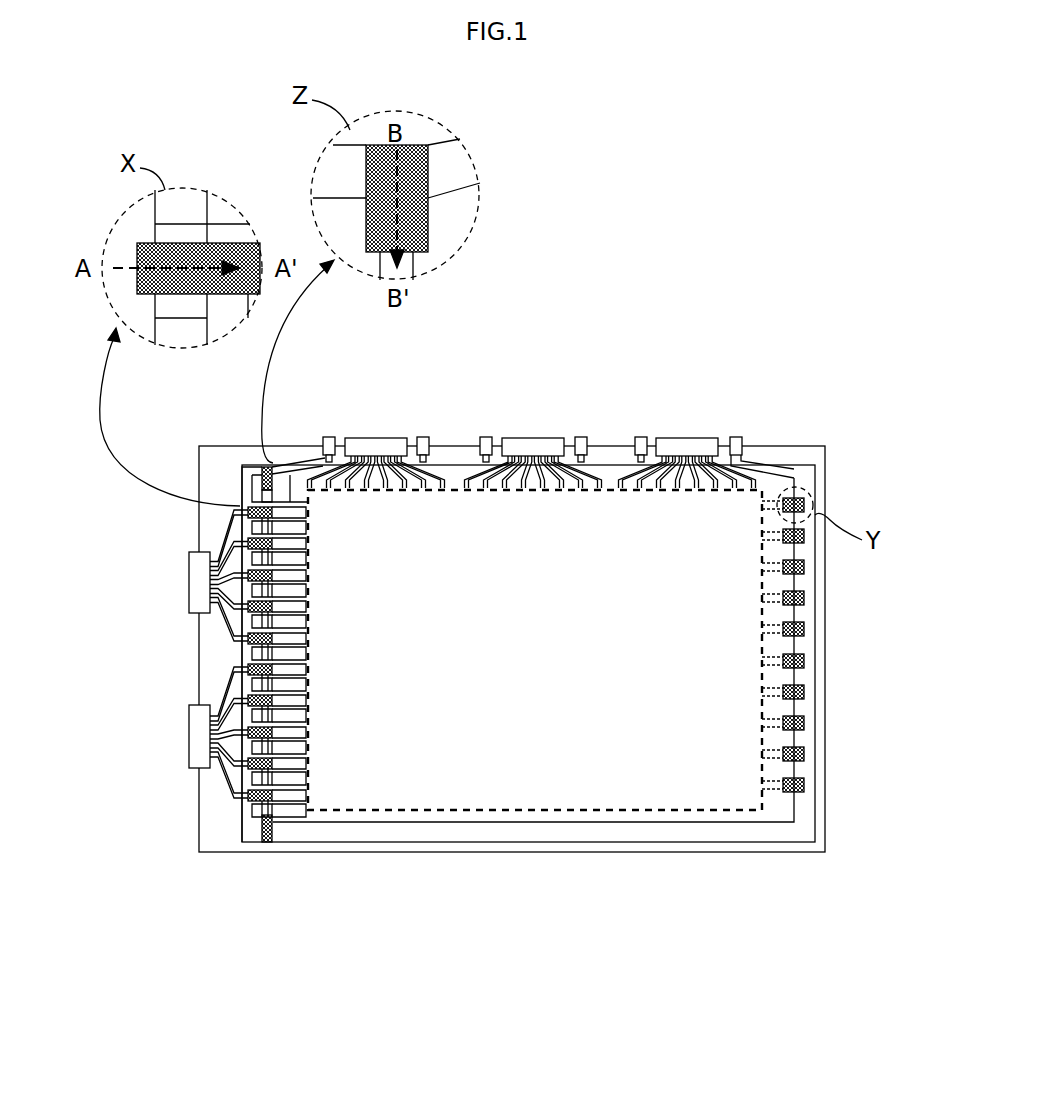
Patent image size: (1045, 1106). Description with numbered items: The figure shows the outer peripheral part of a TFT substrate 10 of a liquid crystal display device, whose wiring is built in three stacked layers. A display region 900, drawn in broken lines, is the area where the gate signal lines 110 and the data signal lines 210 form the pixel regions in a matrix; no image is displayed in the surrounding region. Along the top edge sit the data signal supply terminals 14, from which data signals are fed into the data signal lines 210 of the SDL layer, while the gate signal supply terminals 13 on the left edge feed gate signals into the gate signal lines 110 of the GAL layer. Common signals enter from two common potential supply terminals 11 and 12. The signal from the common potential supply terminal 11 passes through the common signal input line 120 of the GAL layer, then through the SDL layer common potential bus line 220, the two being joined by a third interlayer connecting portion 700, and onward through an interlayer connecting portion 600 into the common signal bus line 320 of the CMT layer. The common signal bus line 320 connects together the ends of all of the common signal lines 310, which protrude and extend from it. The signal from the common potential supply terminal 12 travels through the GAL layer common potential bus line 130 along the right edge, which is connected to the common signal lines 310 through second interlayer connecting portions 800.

The TFT substrate 10 is at (712, 880).
The common potential supply terminal 11 is at (330, 437).
The common potential supply terminal 12 is at (738, 437).
The gate signal supply terminal 13 is at (189, 580).
The data signal supply terminal 14 is at (384, 437).
The gate signal line 110 is at (290, 515).
The common signal input line 120 is at (310, 458).
The GAL layer common potential bus line 130 is at (815, 607).
The data signal line 210 is at (762, 489).
The SDL layer common potential bus line 220 is at (252, 776).
The common signal line 310 is at (296, 805).
The common signal bus line 320 is at (253, 828).
The interlayer connecting portion 600 is at (240, 508).
The third interlayer connecting portion 700 is at (258, 475).
The second interlayer connecting portion 800 is at (800, 502).
The display region 900 is at (545, 812).